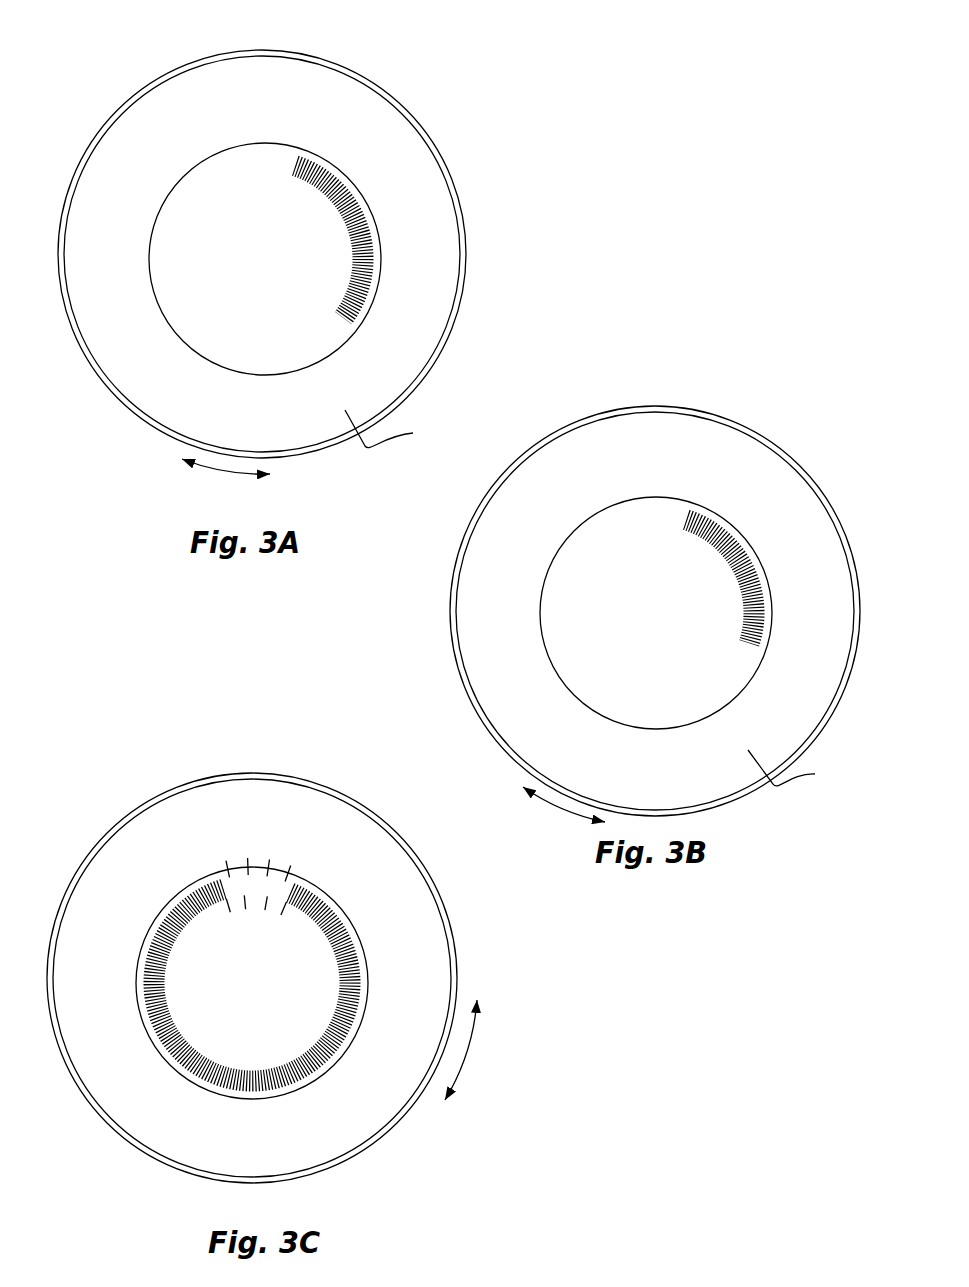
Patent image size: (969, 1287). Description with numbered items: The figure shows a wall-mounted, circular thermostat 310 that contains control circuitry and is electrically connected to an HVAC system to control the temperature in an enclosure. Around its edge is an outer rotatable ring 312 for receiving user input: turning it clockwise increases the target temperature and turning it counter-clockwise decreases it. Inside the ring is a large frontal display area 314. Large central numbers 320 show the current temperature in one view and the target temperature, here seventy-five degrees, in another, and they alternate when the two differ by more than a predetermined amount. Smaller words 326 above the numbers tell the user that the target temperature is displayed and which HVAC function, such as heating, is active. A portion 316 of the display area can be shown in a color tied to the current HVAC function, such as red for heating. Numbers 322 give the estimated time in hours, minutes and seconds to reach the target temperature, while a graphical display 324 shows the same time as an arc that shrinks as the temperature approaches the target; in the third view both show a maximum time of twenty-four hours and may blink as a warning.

In FIG. 3A, the thermostat 310 is at (130, 72).
In FIG. 3B, the thermostat 310 is at (672, 367).
In FIG. 3C, the thermostat 310 is at (237, 750).
In FIG. 3A, the outer rotatable ring 312 is at (160, 428).
In FIG. 3B, the outer rotatable ring 312 is at (480, 712).
In FIG. 3C, the outer rotatable ring 312 is at (172, 1163).
In FIG. 3A, the frontal display area 314 is at (400, 429).
In FIG. 3B, the frontal display area 314 is at (700, 643).
In FIG. 3A, the portion of the display area 316 is at (166, 253).
In FIG. 3A, the central numbers 320 is at (275, 298).
In FIG. 3B, the central numbers 320 is at (665, 653).
In FIG. 3C, the central numbers 320 is at (232, 1018).
In FIG. 3A, the numerical time display 322 is at (253, 148).
In FIG. 3B, the numerical time display 322 is at (646, 506).
In FIG. 3C, the numerical time display 322 is at (250, 858).
In FIG. 3A, the graphical display 324 is at (380, 237).
In FIG. 3B, the graphical display 324 is at (770, 575).
In FIG. 3C, the graphical display 324 is at (365, 966).
In FIG. 3B, the smaller words 326 is at (597, 572).
In FIG. 3C, the smaller words 326 is at (252, 945).